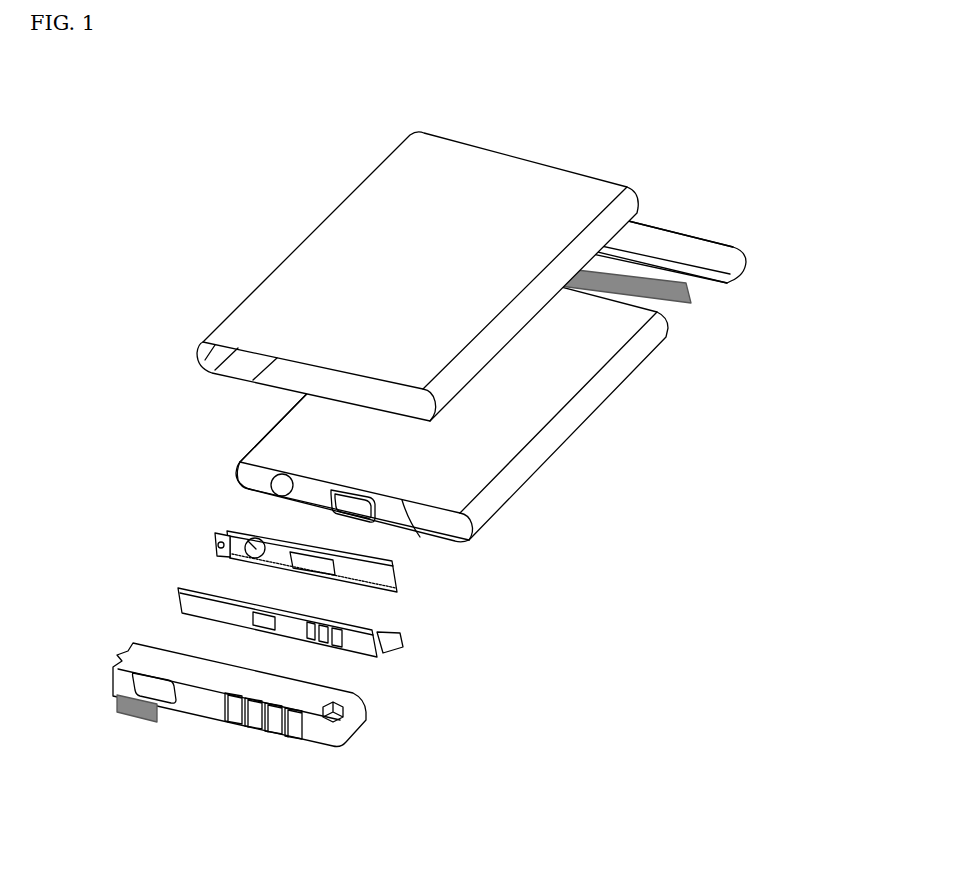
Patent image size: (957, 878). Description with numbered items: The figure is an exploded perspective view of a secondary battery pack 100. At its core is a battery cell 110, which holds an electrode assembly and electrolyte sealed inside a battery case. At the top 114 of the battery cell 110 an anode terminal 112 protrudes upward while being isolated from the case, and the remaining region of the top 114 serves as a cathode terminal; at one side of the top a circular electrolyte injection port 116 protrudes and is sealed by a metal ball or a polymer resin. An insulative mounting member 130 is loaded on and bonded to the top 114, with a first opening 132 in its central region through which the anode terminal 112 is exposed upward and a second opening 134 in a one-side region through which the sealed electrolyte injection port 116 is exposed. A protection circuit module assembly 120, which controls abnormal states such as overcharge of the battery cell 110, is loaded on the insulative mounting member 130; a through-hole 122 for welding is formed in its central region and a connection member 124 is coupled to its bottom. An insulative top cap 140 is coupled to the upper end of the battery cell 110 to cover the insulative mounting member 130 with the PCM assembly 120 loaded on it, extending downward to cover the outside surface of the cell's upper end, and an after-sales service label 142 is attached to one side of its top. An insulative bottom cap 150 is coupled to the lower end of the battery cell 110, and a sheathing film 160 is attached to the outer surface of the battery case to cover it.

The secondary battery pack 100 is at (126, 135).
The battery cell 110 is at (449, 415).
The anode terminal 112 is at (434, 538).
The top of the battery cell 114 is at (480, 519).
The electrolyte injection port 116 is at (240, 463).
The protection circuit module (PCM) assembly 120 is at (280, 647).
The through-hole 122 is at (255, 618).
The connection member 124 is at (405, 636).
The insulative mounting member 130 is at (321, 577).
The first opening 132 is at (305, 568).
The second opening 134 is at (237, 534).
The insulative top cap 140 is at (272, 726).
The after-sales service (A/S) label 142 is at (118, 708).
The insulative bottom cap 150 is at (690, 222).
The sheathing film 160 is at (223, 333).